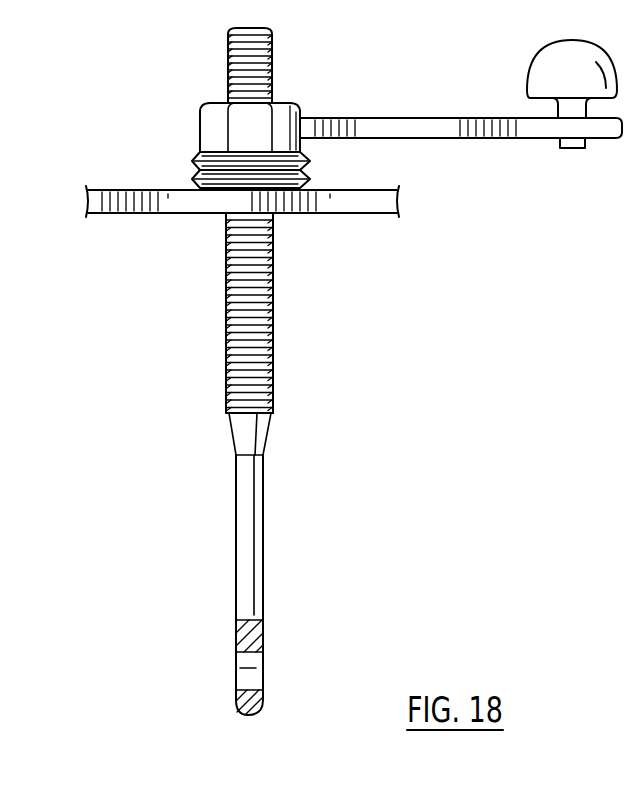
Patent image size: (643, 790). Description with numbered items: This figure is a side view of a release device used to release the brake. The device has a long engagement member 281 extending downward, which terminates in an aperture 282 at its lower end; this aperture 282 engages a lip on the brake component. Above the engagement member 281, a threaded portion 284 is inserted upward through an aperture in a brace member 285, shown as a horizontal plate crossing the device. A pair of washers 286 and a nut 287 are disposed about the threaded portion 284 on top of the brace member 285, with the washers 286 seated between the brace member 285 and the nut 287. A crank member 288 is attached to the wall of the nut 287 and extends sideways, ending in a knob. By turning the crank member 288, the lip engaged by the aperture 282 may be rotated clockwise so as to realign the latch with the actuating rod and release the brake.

The engagement member 281 is at (264, 565).
The aperture 282 is at (250, 675).
The threaded portion 284 is at (273, 375).
The brace member 285 is at (363, 200).
The washers 286 is at (196, 178).
The nut 287 is at (213, 128).
The crank member 288 is at (430, 130).